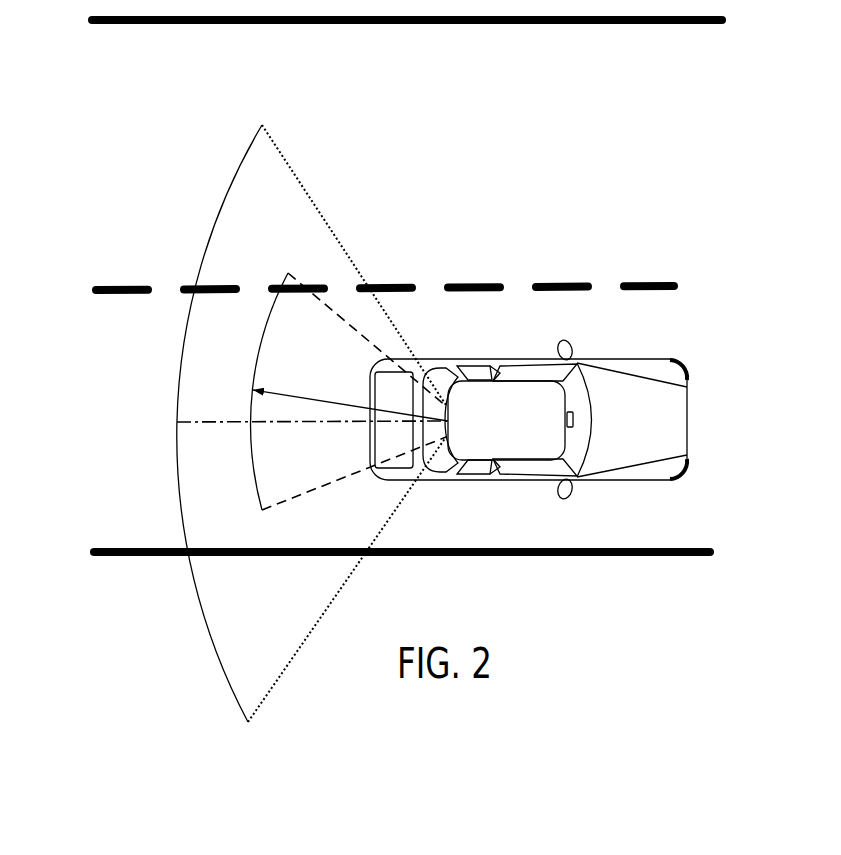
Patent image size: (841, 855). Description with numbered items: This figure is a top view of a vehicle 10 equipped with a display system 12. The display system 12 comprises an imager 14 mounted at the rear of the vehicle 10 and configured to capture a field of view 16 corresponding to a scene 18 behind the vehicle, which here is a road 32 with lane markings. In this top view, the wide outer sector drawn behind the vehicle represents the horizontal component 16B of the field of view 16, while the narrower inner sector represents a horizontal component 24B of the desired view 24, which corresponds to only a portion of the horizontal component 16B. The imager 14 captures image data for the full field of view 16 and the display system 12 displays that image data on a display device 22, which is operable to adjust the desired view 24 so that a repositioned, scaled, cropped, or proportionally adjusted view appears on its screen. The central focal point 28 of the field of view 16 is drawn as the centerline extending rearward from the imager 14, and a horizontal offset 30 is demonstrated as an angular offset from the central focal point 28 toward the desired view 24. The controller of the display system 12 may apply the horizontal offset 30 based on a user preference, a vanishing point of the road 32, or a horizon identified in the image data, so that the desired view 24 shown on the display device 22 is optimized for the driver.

The vehicle 10 is at (514, 430).
The display system 12 is at (533, 445).
The imager 14 is at (451, 410).
The field of view 16 is at (175, 488).
The horizontal component 16B is at (177, 449).
The scene 18 is at (6, 264).
The display device 22 is at (575, 415).
The desired view 24 is at (252, 360).
The horizontal component 24B is at (265, 320).
The central focal point 28 is at (203, 421).
The horizontal offset 30 is at (310, 398).
The road 32 is at (555, 180).